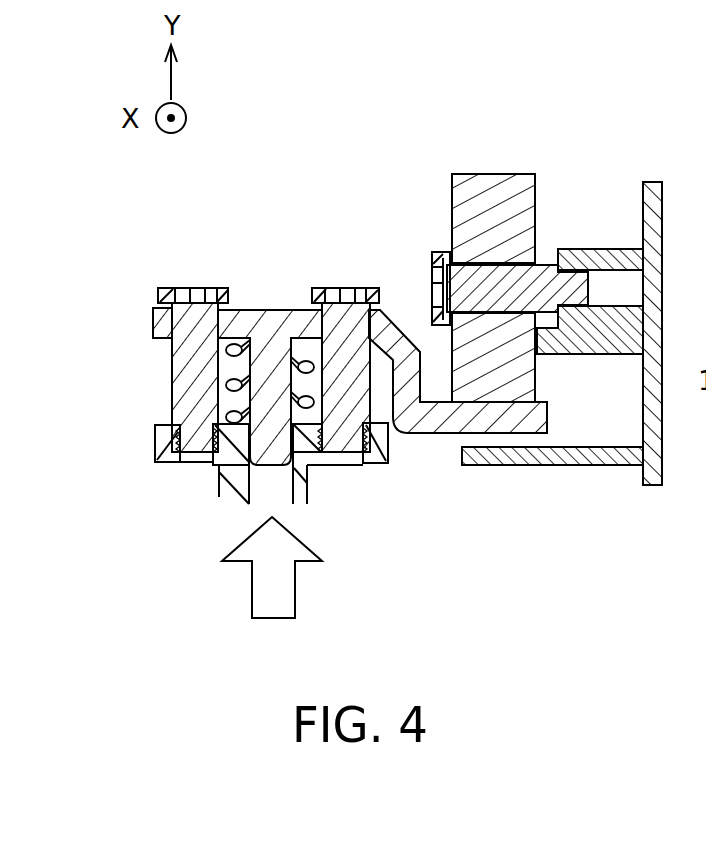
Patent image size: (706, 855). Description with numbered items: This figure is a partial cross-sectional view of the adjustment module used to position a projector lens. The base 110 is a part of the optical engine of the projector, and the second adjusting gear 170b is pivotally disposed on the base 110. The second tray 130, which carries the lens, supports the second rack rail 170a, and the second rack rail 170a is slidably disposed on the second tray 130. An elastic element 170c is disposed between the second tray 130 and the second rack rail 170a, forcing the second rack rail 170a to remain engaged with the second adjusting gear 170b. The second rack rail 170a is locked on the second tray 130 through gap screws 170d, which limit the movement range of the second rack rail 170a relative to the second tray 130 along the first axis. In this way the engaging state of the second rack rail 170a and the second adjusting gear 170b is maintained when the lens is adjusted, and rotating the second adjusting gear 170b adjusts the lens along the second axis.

The base 110 is at (650, 182).
The second tray 130 is at (233, 481).
The second rack rail 170a is at (283, 310).
The second adjusting gear 170b is at (492, 185).
The elastic element 170c is at (238, 349).
The gap screw 170d is at (163, 298).